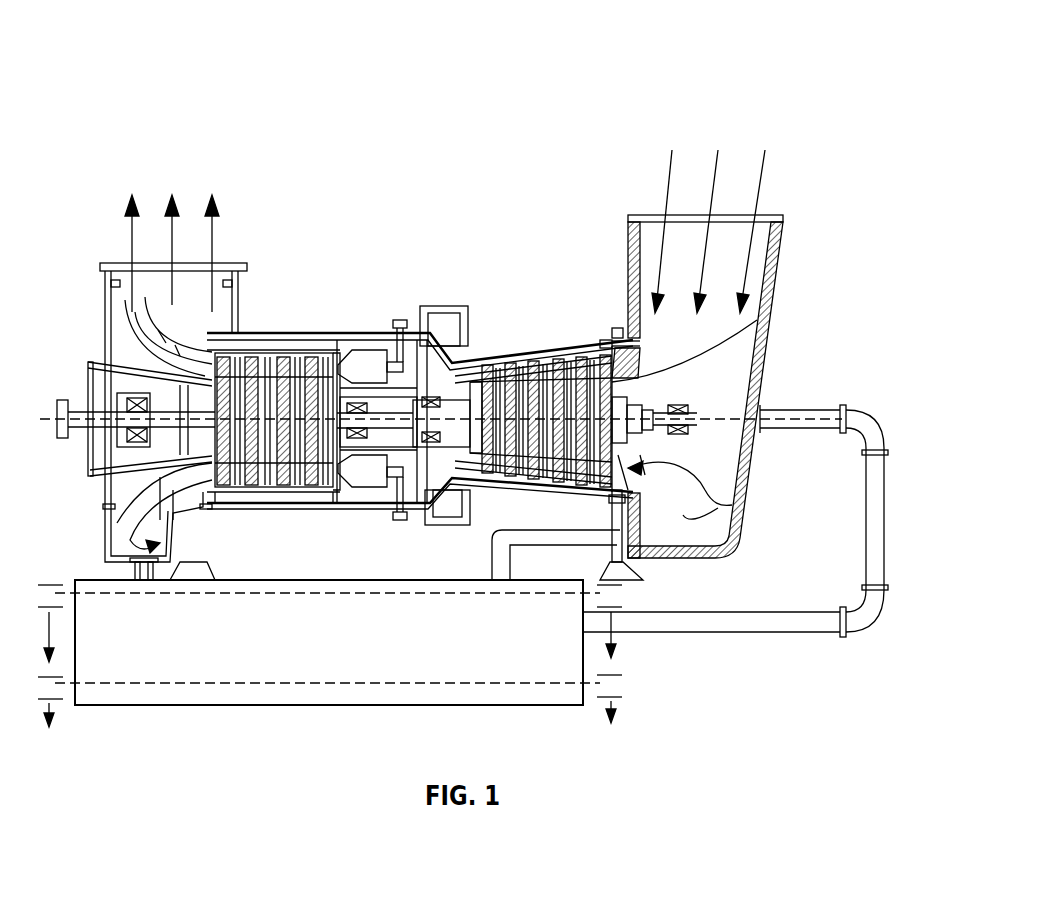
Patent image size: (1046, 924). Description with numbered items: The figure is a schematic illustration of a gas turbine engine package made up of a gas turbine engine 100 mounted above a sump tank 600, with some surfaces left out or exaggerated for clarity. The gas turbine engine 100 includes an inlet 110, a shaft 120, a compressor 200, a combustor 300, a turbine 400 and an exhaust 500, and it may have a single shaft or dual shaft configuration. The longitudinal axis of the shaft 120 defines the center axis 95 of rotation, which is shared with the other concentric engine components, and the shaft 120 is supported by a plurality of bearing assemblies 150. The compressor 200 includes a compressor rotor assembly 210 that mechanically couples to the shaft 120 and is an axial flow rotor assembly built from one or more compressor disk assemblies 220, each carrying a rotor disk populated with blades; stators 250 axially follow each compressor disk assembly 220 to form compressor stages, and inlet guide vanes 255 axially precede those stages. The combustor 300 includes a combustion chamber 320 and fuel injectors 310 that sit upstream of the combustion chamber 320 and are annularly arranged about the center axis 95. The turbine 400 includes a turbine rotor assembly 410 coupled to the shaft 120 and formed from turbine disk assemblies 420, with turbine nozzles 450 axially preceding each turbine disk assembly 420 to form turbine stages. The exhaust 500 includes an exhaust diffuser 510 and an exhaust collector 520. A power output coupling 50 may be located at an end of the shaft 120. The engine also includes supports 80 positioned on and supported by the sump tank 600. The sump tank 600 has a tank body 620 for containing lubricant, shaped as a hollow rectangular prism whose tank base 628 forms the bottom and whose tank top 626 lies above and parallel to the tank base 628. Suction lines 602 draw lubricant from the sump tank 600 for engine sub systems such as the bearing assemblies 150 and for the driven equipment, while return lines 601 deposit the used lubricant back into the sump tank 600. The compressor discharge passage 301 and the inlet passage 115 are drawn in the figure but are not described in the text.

The gas turbine engine 100 is at (768, 42).
The inlet 110 is at (793, 136).
The inlet guide 115 is at (652, 348).
The shaft 120 is at (690, 410).
The bearing assemblies 150 is at (135, 442).
The compressor 200 is at (607, 136).
The compressor rotor assembly 210 is at (547, 512).
The compressor disk assemblies 220 is at (522, 486).
The compressor stationary vanes (stators) 250 is at (545, 365).
The inlet guide vanes 255 is at (622, 355).
The combustor 300 is at (440, 136).
The compressor discharge 301 is at (323, 330).
The fuel injectors 310 is at (402, 320).
The combustion chamber 320 is at (366, 332).
The turbine 400 is at (342, 136).
The turbine rotor assembly 410 is at (312, 498).
The turbine disk assemblies 420 is at (330, 537).
The turbine nozzles 450 is at (310, 347).
The exhaust 500 is at (250, 156).
The exhaust diffuser 510 is at (187, 290).
The exhaust collector 520 is at (120, 303).
The power output coupling 50 is at (63, 400).
The supports 80 is at (197, 561).
The center axis 95 is at (817, 422).
The sump tank 600 is at (78, 590).
The return lines 601 is at (138, 580).
The suction lines 602 is at (868, 505).
The tank body 620 is at (427, 625).
The tank top 626 is at (107, 575).
The tank base 628 is at (520, 700).